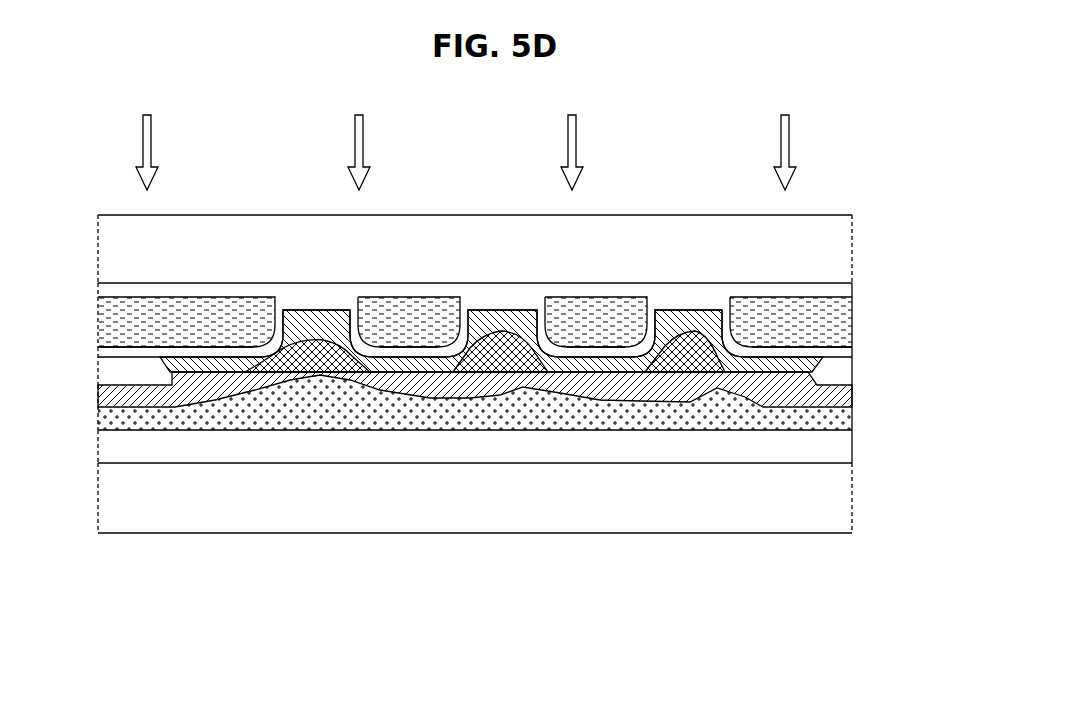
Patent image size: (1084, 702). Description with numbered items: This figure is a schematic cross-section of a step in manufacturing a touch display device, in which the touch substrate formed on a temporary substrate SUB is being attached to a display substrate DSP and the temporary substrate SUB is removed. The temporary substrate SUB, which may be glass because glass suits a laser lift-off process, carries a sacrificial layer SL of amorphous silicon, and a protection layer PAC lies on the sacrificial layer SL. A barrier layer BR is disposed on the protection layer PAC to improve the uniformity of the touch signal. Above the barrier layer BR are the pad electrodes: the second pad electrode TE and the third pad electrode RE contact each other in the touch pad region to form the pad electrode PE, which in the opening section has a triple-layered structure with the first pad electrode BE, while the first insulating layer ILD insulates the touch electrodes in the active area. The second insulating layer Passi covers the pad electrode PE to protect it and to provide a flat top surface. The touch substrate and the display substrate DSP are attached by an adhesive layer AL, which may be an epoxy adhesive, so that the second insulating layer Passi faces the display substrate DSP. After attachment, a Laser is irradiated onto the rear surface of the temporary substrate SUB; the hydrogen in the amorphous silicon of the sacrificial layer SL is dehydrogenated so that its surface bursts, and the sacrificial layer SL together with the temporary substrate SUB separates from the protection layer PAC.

The temporary substrate SUB is at (838, 238).
The sacrificial layer SL is at (838, 290).
The protection layer PAC is at (838, 317).
The barrier layer BR is at (838, 353).
The first insulating layer ILD is at (838, 372).
The second insulating layer Passi is at (838, 418).
The adhesive layer AL is at (838, 448).
The display substrate DSP is at (95, 463).
The second pad electrode TE is at (641, 398).
The first pad electrode BE is at (690, 398).
The third pad electrode RE is at (753, 398).
The pad electrode PE is at (475, 488).
The laser irradiation Laser is at (466, 138).